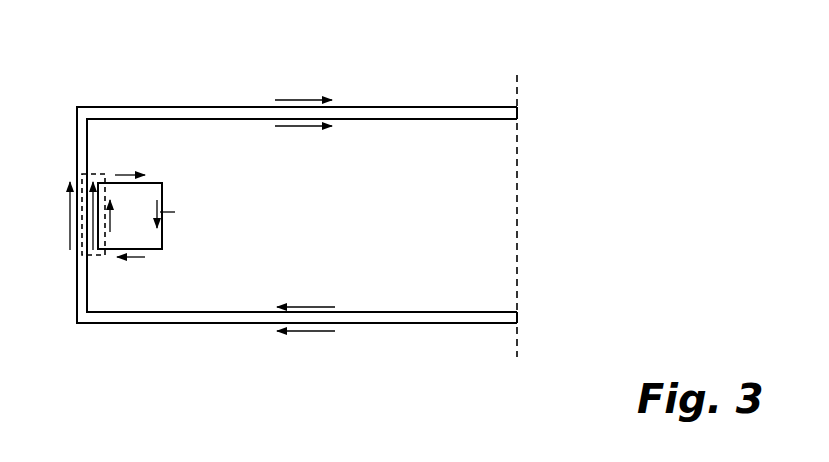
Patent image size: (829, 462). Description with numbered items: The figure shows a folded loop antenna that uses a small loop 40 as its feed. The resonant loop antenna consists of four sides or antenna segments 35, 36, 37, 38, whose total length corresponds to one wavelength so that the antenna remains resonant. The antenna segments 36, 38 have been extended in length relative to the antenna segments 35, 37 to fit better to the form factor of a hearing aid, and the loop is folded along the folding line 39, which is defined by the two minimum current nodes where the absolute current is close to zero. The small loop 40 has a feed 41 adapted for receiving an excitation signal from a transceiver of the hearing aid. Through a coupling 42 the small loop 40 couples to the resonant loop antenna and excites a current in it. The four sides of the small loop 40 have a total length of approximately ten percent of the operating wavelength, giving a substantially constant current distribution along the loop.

The antenna segment 35 is at (94, 148).
The antenna segment 36 is at (437, 102).
The antenna segment 37 is at (69, 303).
The antenna segment 38 is at (386, 332).
The folding line 39 is at (517, 194).
The small loop 40 is at (181, 266).
The feed 41 is at (178, 219).
The coupling 42 is at (82, 180).